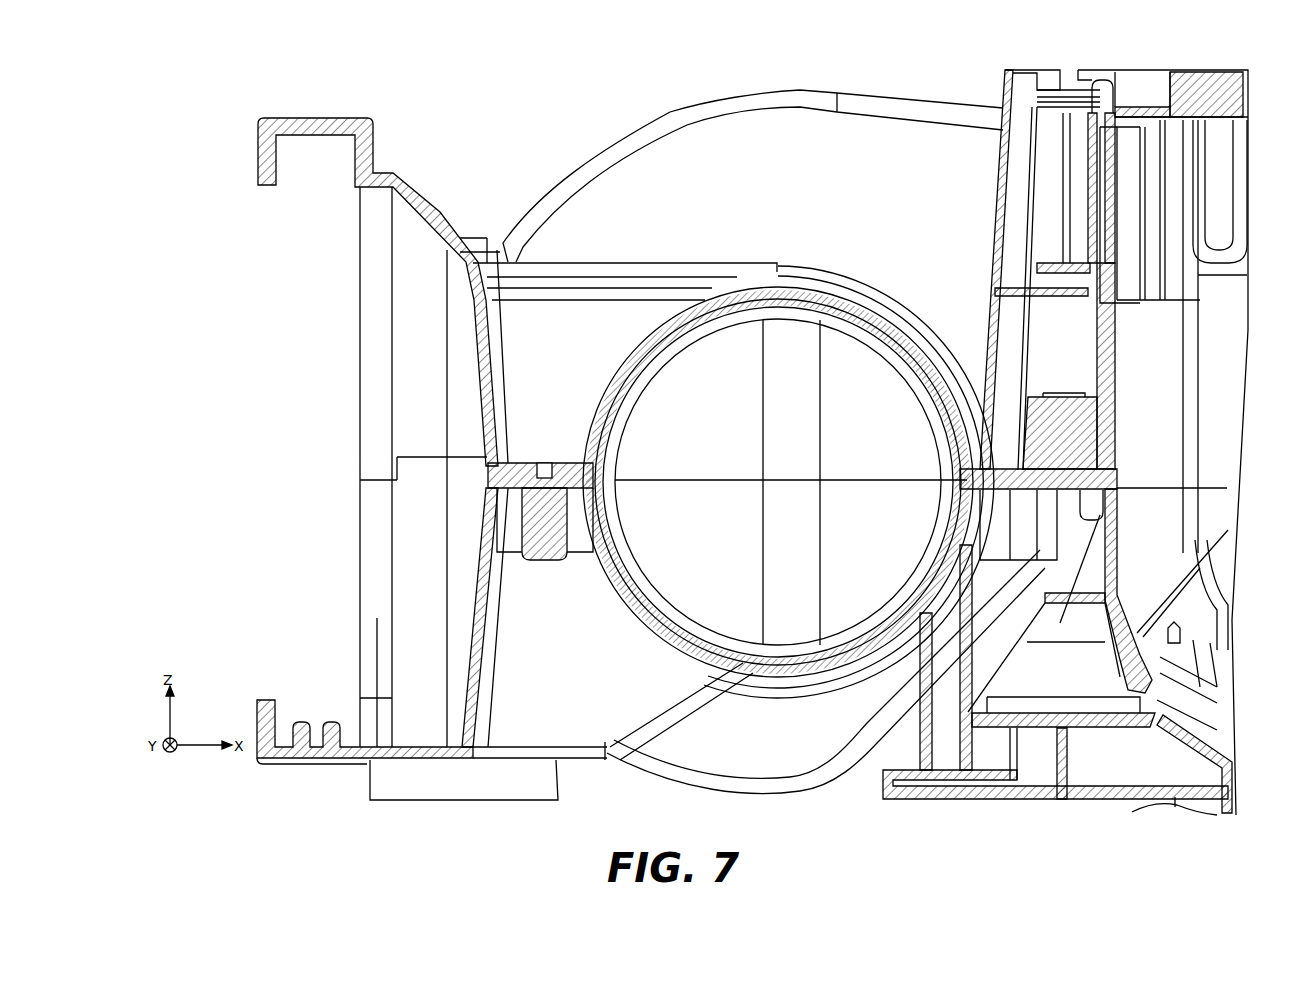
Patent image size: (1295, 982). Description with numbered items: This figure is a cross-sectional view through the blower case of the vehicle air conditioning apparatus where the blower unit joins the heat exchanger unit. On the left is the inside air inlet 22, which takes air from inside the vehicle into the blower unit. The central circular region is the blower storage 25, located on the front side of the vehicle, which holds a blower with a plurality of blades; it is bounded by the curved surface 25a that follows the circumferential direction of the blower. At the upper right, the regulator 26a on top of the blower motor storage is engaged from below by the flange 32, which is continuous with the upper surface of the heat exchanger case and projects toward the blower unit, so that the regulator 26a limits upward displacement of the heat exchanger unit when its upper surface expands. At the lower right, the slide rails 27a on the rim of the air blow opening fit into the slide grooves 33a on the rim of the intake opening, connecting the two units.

The inside air inlet 22 is at (265, 338).
The blower storage 25 is at (938, 103).
The curved surface 25a is at (547, 187).
The regulator 26a is at (1045, 70).
The flange 32 is at (1072, 90).
The slide groove 33a is at (1132, 100).
The slide rail 27a is at (1034, 600).